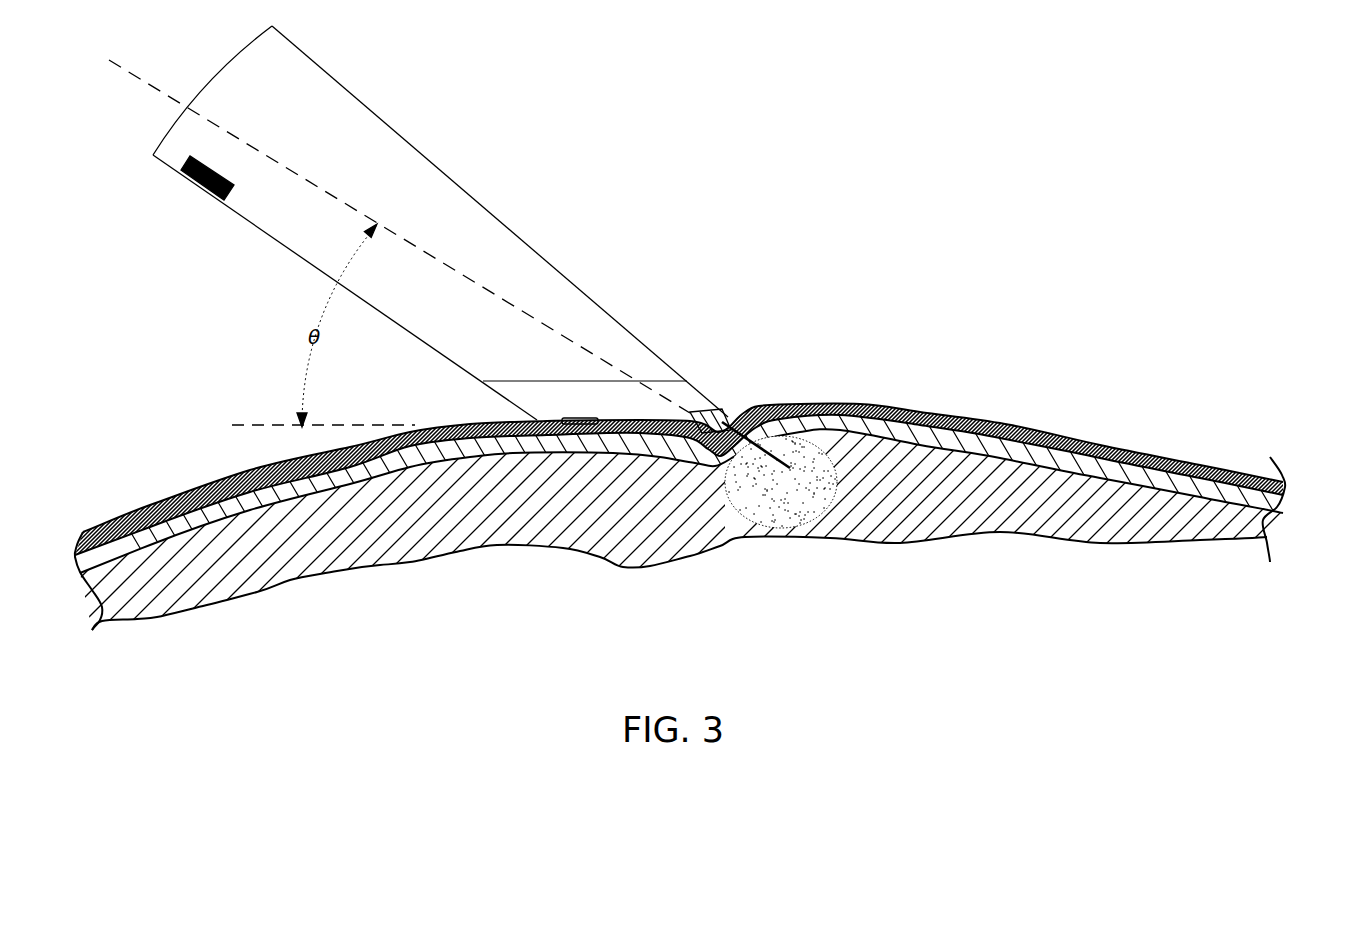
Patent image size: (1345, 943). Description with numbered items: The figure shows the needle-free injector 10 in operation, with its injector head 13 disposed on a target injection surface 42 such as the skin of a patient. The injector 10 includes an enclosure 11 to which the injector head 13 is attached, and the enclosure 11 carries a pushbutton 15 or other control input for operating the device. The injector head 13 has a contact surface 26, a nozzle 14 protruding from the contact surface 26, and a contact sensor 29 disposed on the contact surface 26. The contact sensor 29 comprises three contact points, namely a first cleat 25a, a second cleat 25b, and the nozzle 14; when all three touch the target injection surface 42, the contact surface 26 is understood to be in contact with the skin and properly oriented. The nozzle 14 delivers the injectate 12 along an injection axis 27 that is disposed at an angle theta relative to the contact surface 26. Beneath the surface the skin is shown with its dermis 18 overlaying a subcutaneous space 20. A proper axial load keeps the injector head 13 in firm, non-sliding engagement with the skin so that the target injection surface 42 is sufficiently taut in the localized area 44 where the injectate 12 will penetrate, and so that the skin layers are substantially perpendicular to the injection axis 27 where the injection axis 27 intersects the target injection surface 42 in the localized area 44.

The injector 10 is at (460, 229).
The enclosure 11 is at (397, 128).
The injectate 12 is at (842, 405).
The injector head 13 is at (697, 387).
The nozzle 14 is at (688, 455).
The pushbutton 15 is at (197, 187).
The dermis 18 is at (1277, 515).
The subcutaneous space 20 is at (1257, 530).
The first cleat 25a is at (490, 500).
The second cleat 25b is at (490, 500).
The contact surface 26 is at (556, 500).
The injection axis 27 is at (422, 247).
The contact sensor 29 is at (640, 440).
The target injection surface 42 is at (537, 421).
The localized area 44 is at (723, 420).